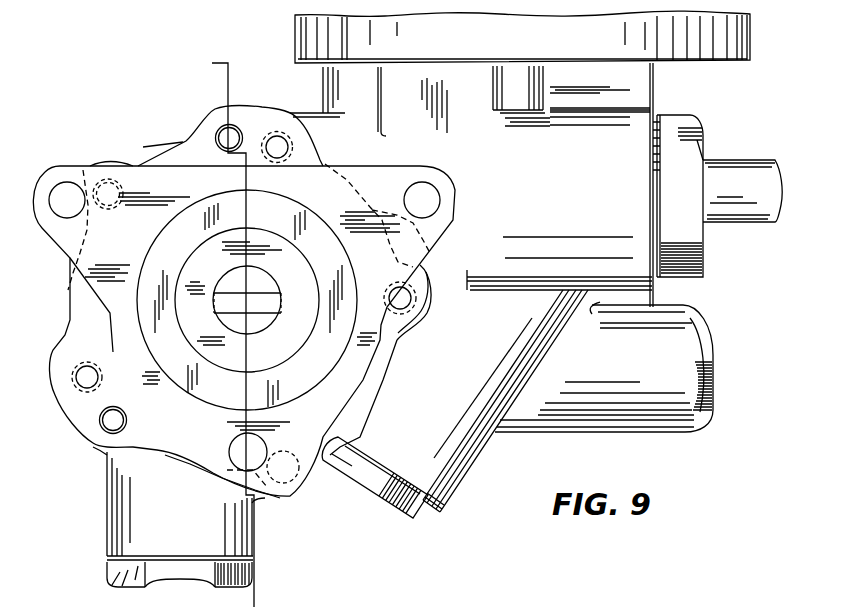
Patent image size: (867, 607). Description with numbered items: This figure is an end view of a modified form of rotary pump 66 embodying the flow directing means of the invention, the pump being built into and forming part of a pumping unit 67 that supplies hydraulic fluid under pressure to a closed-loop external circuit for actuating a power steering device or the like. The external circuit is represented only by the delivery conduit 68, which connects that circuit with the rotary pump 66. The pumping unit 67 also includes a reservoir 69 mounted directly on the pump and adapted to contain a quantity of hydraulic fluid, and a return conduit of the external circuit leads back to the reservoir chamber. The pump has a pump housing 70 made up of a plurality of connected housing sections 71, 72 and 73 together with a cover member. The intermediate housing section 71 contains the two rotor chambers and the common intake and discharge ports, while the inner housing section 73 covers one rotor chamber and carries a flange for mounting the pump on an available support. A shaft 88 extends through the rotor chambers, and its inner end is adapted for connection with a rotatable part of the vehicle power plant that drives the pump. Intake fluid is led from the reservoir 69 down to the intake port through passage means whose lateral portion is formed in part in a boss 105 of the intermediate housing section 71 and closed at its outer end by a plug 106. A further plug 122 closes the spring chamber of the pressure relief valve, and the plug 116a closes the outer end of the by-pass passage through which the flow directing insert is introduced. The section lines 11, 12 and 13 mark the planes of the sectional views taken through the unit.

The section line 11- 11 is at (228, 63).
The section line 12- 12 is at (390, 604).
The section line 13- 13 is at (485, 606).
The rotary pump 66 is at (68, 302).
The pumping unit 67 is at (654, 89).
The delivery conduit 68 is at (762, 143).
The reservoir 69 is at (735, 33).
The pump housing 70 is at (308, 115).
The intermediate housing section 71 is at (518, 422).
The housing section 72 is at (563, 454).
The inner housing section 73 is at (90, 322).
The shaft 88 is at (258, 325).
The boss 105 is at (627, 427).
The plug 106 is at (702, 343).
The plug 116a is at (387, 493).
The plug 122 is at (125, 573).